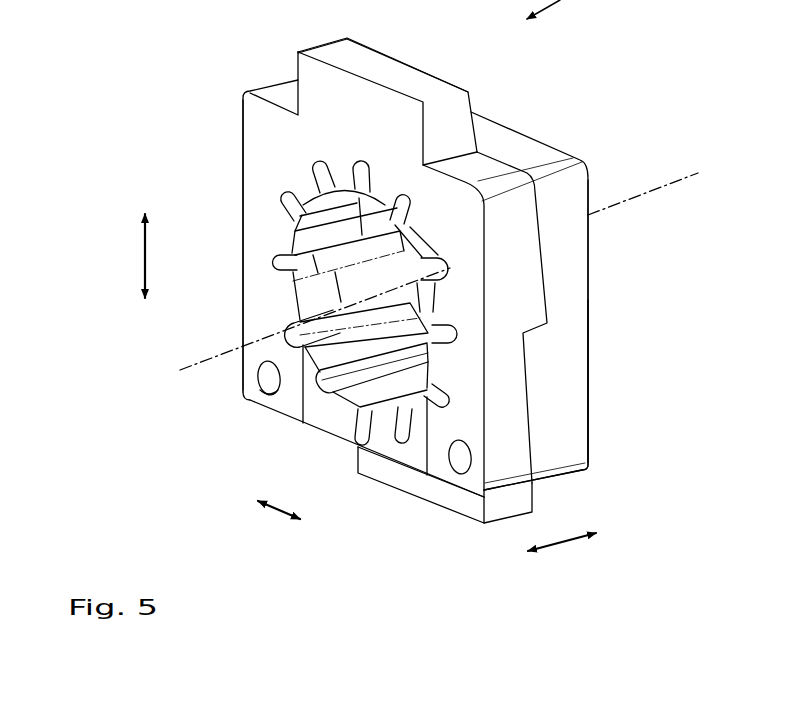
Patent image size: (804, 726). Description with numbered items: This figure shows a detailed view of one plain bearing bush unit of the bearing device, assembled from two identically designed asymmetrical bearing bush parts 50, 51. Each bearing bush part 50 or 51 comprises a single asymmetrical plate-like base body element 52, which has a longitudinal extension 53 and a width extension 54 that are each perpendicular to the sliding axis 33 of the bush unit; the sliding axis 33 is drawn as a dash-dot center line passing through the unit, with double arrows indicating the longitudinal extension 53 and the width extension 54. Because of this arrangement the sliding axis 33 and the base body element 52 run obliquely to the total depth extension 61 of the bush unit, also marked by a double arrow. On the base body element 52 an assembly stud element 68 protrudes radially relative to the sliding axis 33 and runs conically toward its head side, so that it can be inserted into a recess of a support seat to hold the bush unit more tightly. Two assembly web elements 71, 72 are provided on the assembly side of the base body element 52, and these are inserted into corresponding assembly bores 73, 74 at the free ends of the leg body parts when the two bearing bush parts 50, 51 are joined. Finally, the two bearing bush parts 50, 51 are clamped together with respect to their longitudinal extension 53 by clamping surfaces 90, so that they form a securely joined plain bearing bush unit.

The sliding axis 33 is at (694, 176).
The asymmetrical bearing bush part 50 is at (253, 121).
The asymmetrical bearing bush part 51 is at (573, 440).
The asymmetrical plate-like base body element 52 is at (253, 143).
The longitudinal extension 53 is at (145, 257).
The width extension 54 is at (277, 510).
The total depth extension 61 is at (563, 547).
The assembly stud element 68 is at (370, 62).
The assembly web element 71 is at (267, 393).
The assembly web element 72 is at (460, 465).
The assembly bore 73 is at (452, 480).
The assembly bore 74 is at (281, 397).
The clamping surface 90 is at (540, 328).